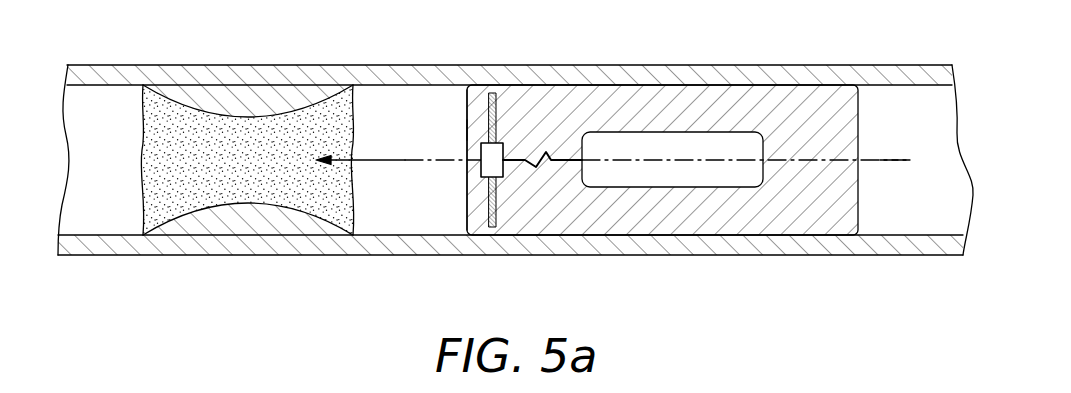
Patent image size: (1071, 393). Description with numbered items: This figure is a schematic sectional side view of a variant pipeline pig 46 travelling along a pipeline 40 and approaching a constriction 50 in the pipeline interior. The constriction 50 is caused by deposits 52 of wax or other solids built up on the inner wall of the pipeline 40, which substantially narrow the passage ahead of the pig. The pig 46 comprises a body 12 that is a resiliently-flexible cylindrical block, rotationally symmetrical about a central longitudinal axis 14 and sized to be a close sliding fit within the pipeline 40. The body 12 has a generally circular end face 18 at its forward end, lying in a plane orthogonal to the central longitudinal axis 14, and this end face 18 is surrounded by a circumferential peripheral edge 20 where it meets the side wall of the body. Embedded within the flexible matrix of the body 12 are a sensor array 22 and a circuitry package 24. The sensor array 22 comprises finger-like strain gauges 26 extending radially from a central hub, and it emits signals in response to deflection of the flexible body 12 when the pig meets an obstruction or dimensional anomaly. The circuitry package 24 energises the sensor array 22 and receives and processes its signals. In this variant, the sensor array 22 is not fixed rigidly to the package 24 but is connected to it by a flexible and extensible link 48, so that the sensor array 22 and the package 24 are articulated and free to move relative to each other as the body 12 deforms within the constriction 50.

The body 12 is at (810, 220).
The central longitudinal axis 14 is at (900, 160).
The end face 18 is at (467, 130).
The circumferential peripheral edge 20 is at (467, 85).
The sensor array 22 is at (467, 175).
The circuitry package 24 is at (672, 178).
The strain gauge 26 is at (491, 93).
The pipeline 40 is at (700, 65).
The pig 46 is at (888, 187).
The flexible and extensible link 48 is at (549, 160).
The constriction 50 is at (263, 171).
The deposit 52 is at (247, 97).